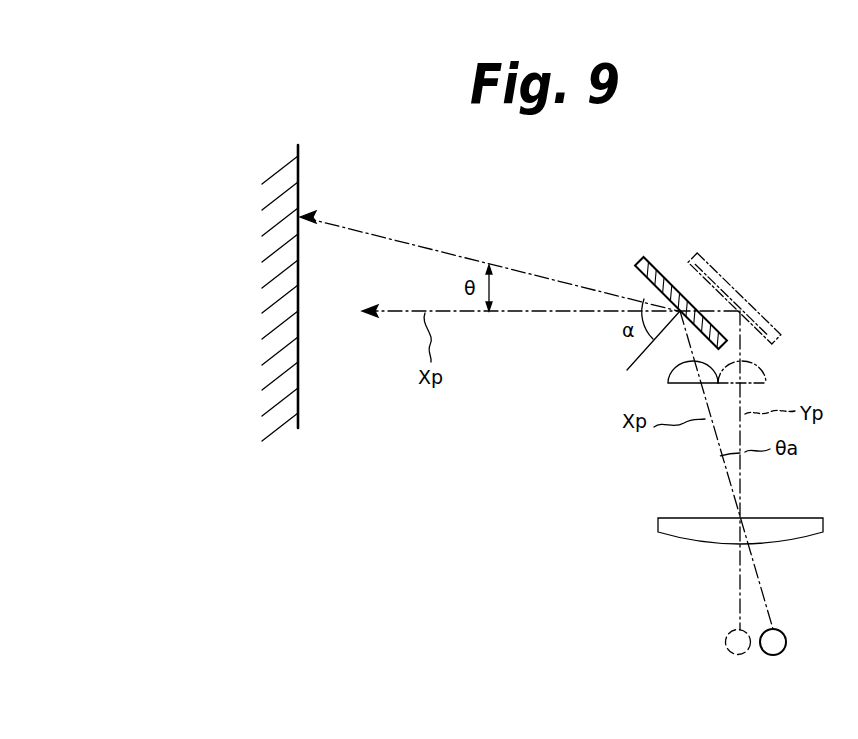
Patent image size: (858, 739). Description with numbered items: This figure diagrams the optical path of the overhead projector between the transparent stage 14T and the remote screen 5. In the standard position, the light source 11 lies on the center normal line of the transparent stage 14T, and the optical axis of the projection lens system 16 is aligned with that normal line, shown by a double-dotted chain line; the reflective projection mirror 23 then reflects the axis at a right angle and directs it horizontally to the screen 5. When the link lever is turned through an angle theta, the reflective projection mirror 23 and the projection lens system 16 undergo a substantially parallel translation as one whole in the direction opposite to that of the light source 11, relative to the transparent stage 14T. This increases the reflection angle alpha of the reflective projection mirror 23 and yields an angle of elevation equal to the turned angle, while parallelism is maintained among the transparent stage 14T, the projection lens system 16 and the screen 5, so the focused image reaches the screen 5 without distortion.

The screen 5 is at (301, 163).
The light source 11 is at (787, 642).
The transparent stage 14T is at (820, 518).
The projection lens system 16 is at (668, 383).
The reflective projection mirror 23 is at (645, 262).